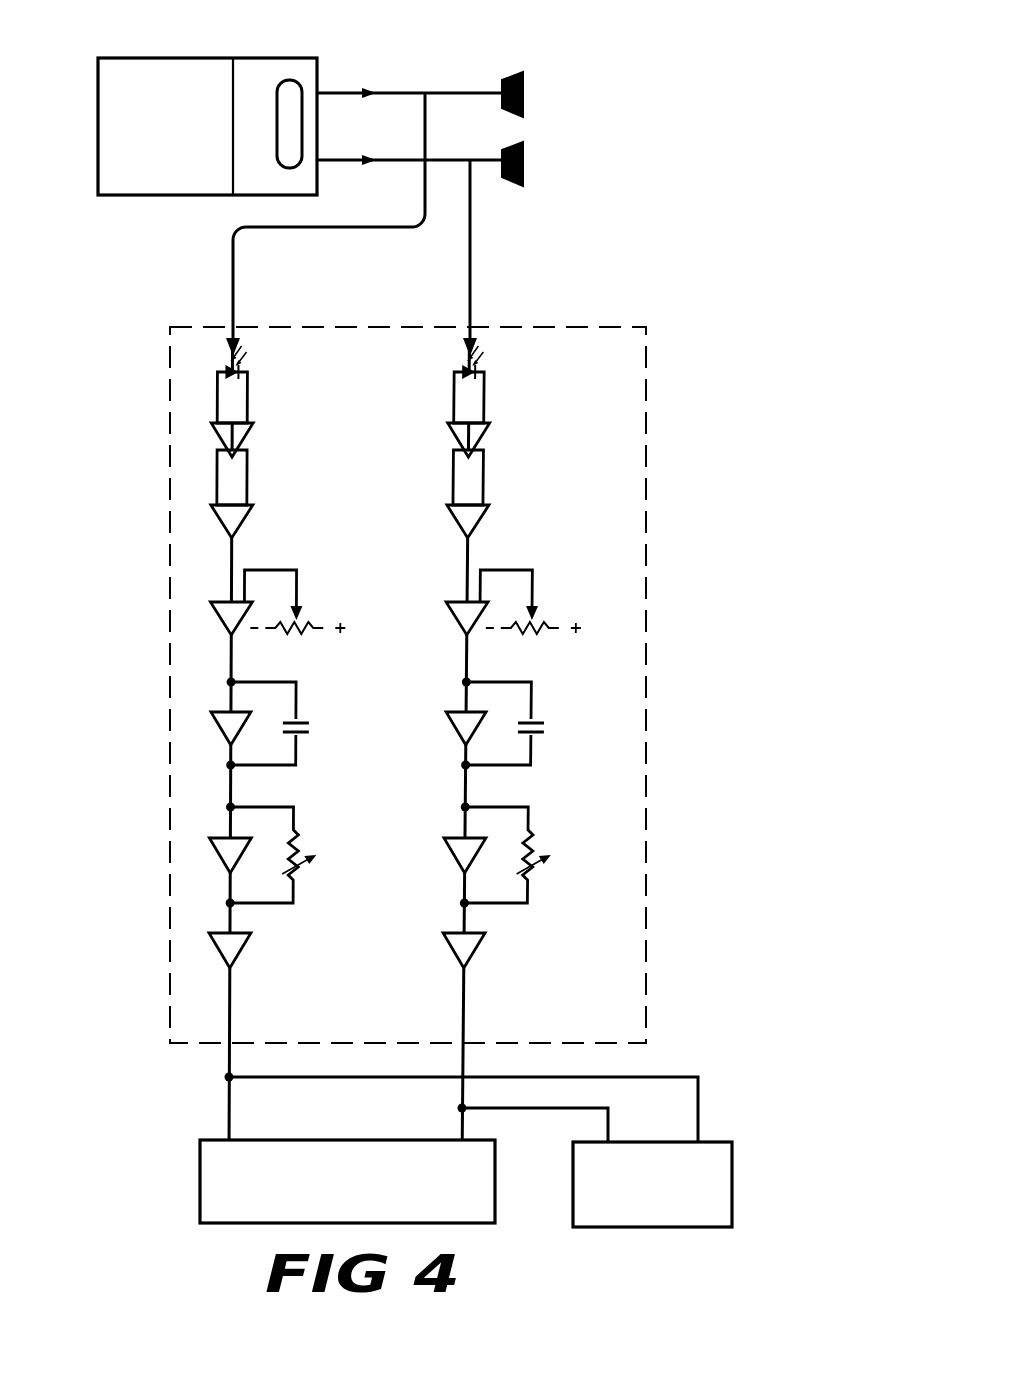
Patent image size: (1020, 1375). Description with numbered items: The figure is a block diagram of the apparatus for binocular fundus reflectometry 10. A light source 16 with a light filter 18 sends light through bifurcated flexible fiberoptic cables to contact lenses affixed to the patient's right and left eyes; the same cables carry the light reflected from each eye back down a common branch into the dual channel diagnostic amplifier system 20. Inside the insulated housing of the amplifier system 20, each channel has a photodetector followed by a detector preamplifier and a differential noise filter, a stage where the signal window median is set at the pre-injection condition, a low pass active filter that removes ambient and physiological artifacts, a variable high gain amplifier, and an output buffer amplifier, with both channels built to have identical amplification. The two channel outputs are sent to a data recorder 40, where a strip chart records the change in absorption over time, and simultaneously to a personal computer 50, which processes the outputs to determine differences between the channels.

The apparatus for binocular fundus reflectometry 10 is at (376, 97).
The light source 16 is at (178, 57).
The light filter 18 is at (279, 58).
The dual channel diagnostic amplifier system 20 is at (826, 313).
The data recorder 40 is at (216, 1140).
The personal computer 50 is at (717, 1141).